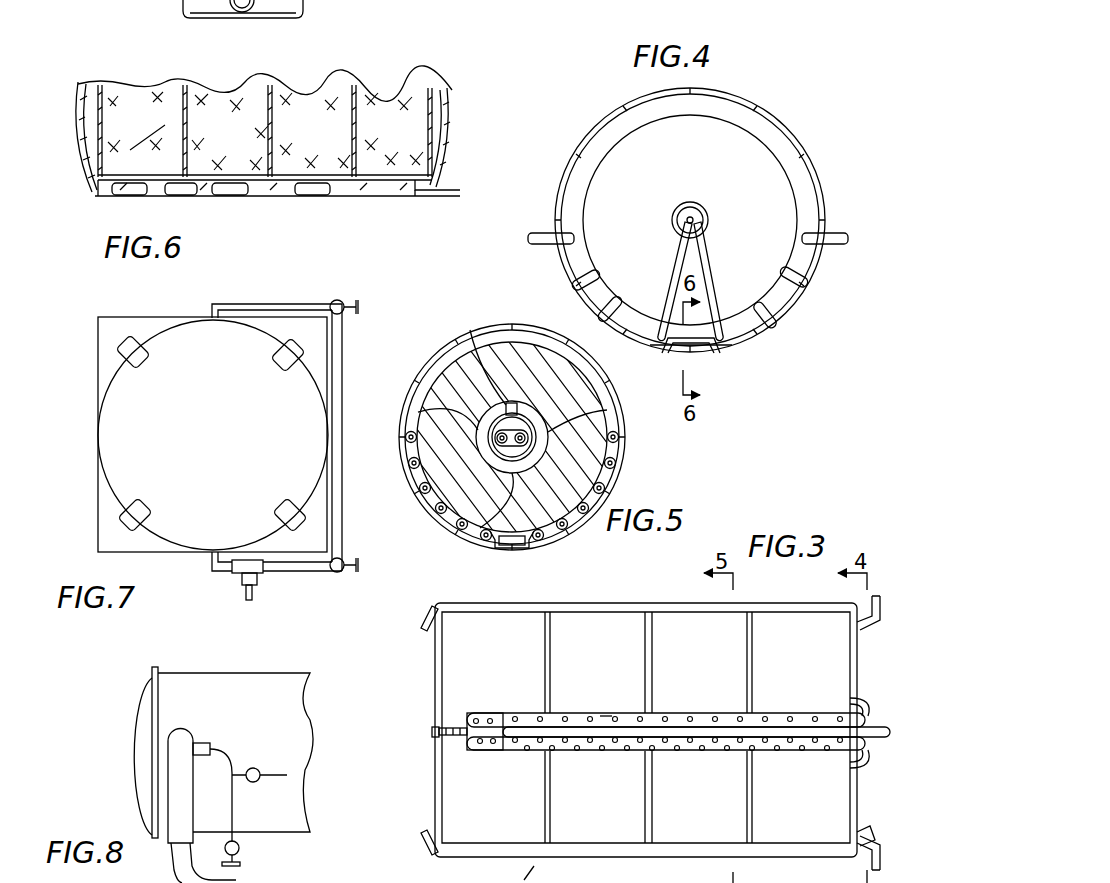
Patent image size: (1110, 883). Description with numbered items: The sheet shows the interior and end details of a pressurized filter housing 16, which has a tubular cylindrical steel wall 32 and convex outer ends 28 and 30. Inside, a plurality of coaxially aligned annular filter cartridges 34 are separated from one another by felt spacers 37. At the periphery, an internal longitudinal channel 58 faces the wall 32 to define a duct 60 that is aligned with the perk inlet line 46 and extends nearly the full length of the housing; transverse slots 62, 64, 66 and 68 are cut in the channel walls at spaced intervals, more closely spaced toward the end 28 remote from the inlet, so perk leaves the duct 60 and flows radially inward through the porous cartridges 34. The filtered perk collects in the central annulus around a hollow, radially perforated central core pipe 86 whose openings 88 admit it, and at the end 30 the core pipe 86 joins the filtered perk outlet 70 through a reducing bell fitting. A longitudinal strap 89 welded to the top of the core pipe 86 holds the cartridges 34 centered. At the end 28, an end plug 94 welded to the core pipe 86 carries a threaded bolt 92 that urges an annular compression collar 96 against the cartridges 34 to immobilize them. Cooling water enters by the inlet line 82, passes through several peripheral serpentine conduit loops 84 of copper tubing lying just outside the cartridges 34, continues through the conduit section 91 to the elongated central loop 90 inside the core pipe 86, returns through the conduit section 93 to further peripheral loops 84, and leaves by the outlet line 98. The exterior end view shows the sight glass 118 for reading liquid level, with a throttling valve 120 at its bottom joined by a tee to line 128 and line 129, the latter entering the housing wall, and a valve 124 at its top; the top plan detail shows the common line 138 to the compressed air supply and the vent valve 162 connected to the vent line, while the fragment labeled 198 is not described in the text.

In FIG. 4, the filter housing 16 is at (570, 134).
In FIG. 7, the filter housing 16 is at (90, 446).
In FIG. 8, the filter housing 16 is at (328, 822).
In FIG. 6, the convex outer end 28 is at (90, 190).
In FIG. 7, the convex outer end 28 is at (144, 398).
In FIG. 3, the convex outer end 28 is at (432, 614).
In FIG. 8, the convex outer end 28 is at (138, 718).
In FIG. 6, the convex outer end 30 is at (450, 118).
In FIG. 4, the convex outer end 30 is at (770, 188).
In FIG. 3, the convex outer end 30 is at (876, 835).
In FIG. 4, the cylindrical steel wall 32 is at (780, 114).
In FIG. 5, the cylindrical steel wall 32 is at (426, 372).
In FIG. 6, the filter cartridge 34 is at (265, 131).
In FIG. 3, the filter cartridge 34 is at (500, 677).
In FIG. 3, the felt spacer 37 is at (551, 666).
In FIG. 6, the perk inlet line 46 is at (450, 191).
In FIG. 6, the internal longitudinal channel 58 is at (412, 176).
In FIG. 4, the internal longitudinal channel 58 is at (720, 350).
In FIG. 5, the internal longitudinal channel 58 is at (538, 546).
In FIG. 6, the duct 60 is at (390, 196).
In FIG. 4, the duct 60 is at (694, 352).
In FIG. 5, the duct 60 is at (510, 546).
In FIG. 6, the transverse slot 62 is at (312, 194).
In FIG. 6, the transverse slot 64 is at (232, 194).
In FIG. 6, the transverse slot 66 is at (185, 194).
In FIG. 6, the transverse slot 68 is at (126, 194).
In FIG. 4, the filtered perk outlet 70 is at (706, 216).
In FIG. 3, the filtered perk outlet 70 is at (876, 728).
In FIG. 4, the cooling water inlet line 82 is at (540, 236).
In FIG. 3, the cooling water inlet line 82 is at (882, 864).
In FIG. 4, the peripheral serpentine conduit loop 84 is at (580, 280).
In FIG. 4, the central core pipe 86 is at (698, 208).
In FIG. 5, the central core pipe 86 is at (612, 412).
In FIG. 3, the central core pipe 86 is at (800, 756).
In FIG. 5, the opening 88 is at (410, 432).
In FIG. 3, the opening 88 is at (493, 744).
In FIG. 5, the longitudinal strap 89 is at (478, 360).
In FIG. 4, the central conduit loop 90 is at (688, 214).
In FIG. 5, the central conduit loop 90 is at (520, 416).
In FIG. 3, the central conduit loop 90 is at (609, 727).
In FIG. 4, the conduit section 91 is at (668, 292).
In FIG. 3, the conduit section 91 is at (868, 760).
In FIG. 3, the threaded bolt 92 is at (432, 733).
In FIG. 4, the conduit section 93 is at (712, 306).
In FIG. 3, the conduit section 93 is at (866, 710).
In FIG. 3, the end plug 94 is at (452, 742).
In FIG. 3, the annular compression collar 96 is at (438, 673).
In FIG. 4, the cooling water outlet line 98 is at (834, 240).
In FIG. 3, the cooling water outlet line 98 is at (880, 620).
In FIG. 7, the sight glass 118 is at (338, 533).
In FIG. 7, the throttling valve 120 is at (334, 574).
In FIG. 7, the valve 124 is at (352, 291).
In FIG. 8, the valve 124 is at (252, 853).
In FIG. 7, the line 128 is at (257, 594).
In FIG. 7, the line 129 is at (222, 580).
In FIG. 7, the common line 138 is at (265, 292).
In FIG. 8, the common line 138 is at (178, 772).
In FIG. 8, the vent valve 162 is at (255, 768).
In FIG. 6, the fitting 198 is at (266, 9).